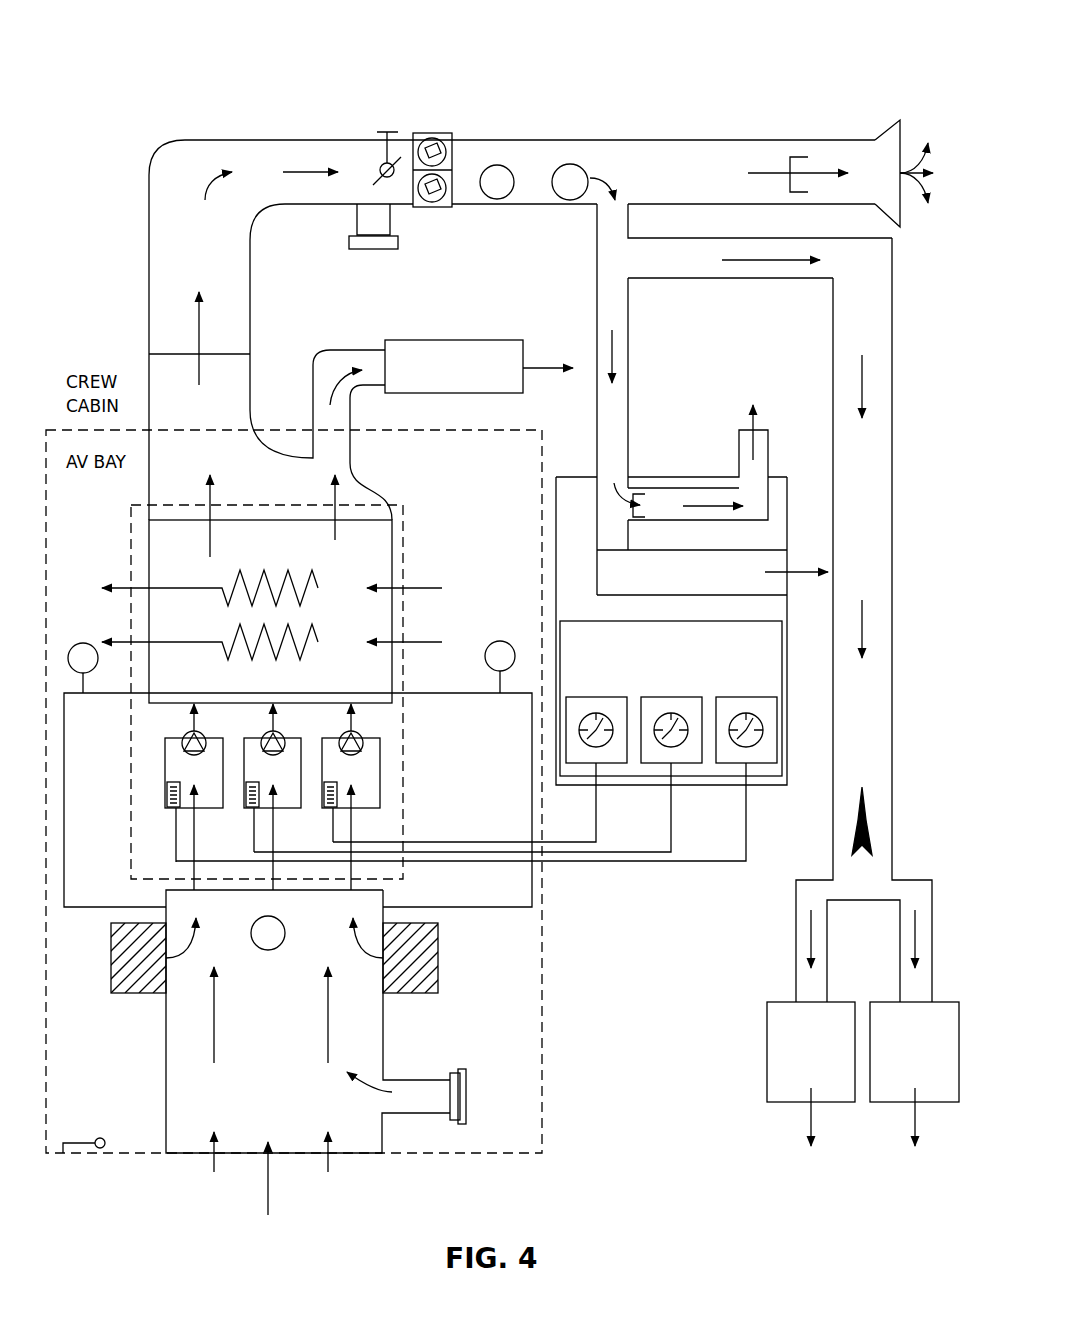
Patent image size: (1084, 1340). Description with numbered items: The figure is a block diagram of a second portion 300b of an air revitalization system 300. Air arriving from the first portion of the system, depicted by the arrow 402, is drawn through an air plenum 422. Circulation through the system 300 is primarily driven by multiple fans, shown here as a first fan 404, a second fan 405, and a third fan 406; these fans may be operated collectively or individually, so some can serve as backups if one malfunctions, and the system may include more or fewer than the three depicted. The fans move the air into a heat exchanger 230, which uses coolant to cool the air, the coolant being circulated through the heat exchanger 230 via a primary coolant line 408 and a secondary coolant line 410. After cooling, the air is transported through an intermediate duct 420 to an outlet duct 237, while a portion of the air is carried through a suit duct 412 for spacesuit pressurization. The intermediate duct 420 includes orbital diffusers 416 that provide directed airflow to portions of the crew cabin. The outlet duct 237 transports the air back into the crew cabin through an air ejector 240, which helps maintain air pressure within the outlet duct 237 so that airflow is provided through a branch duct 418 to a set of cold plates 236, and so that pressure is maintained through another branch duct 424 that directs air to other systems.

The air revitalization system 300 is at (128, 40).
The second portion 300b is at (213, 102).
The intermediate duct 420 is at (148, 220).
The orbital diffusers 416 is at (430, 133).
The outlet duct 237 is at (658, 140).
The air ejector 240 is at (893, 128).
The suit duct 412 is at (373, 388).
The branch duct 424 is at (597, 392).
The heat exchanger 230 is at (148, 530).
The secondary coolant line 410 is at (415, 588).
The primary coolant line 408 is at (410, 642).
The second fan 405 is at (298, 740).
The first fan 404 is at (165, 757).
The third fan 406 is at (380, 798).
The branch duct 418 is at (893, 648).
The cold plates 236 is at (783, 1102).
The air plenum 422 is at (166, 1060).
The arrow 402 is at (268, 1185).